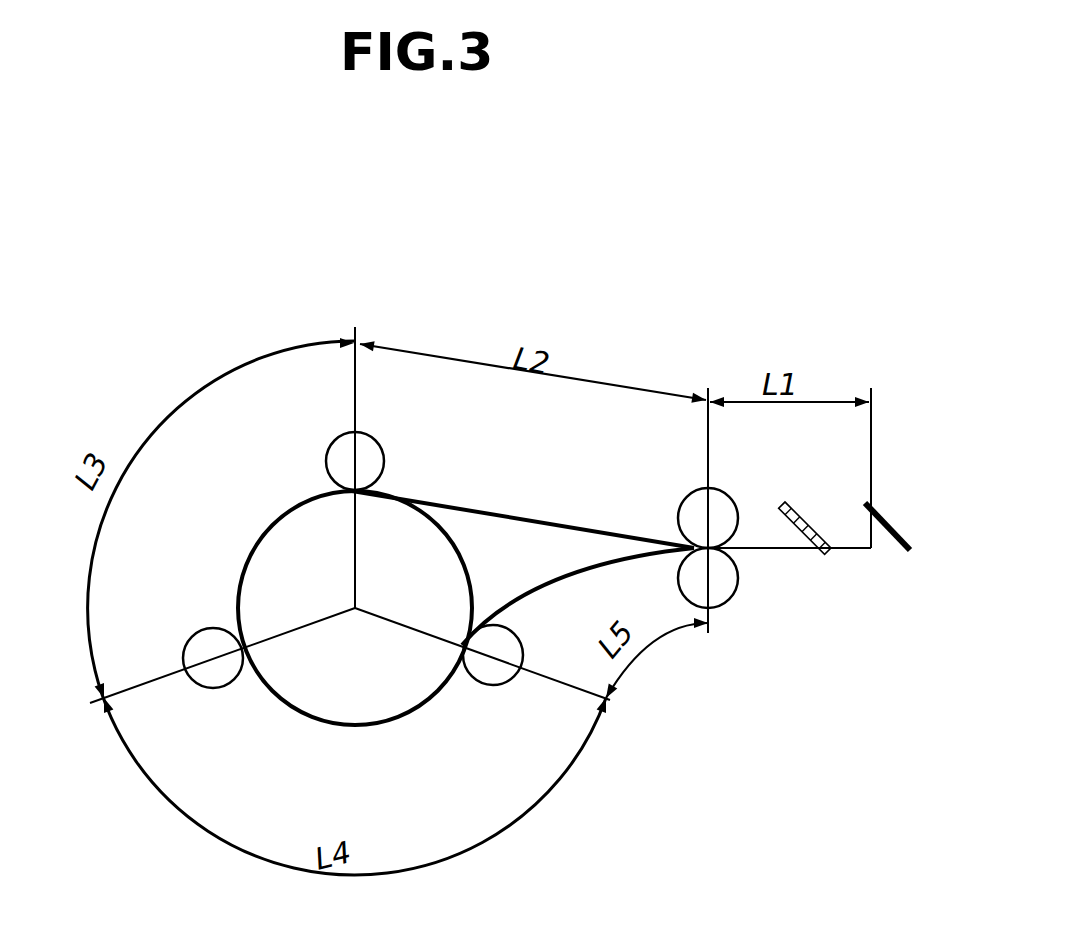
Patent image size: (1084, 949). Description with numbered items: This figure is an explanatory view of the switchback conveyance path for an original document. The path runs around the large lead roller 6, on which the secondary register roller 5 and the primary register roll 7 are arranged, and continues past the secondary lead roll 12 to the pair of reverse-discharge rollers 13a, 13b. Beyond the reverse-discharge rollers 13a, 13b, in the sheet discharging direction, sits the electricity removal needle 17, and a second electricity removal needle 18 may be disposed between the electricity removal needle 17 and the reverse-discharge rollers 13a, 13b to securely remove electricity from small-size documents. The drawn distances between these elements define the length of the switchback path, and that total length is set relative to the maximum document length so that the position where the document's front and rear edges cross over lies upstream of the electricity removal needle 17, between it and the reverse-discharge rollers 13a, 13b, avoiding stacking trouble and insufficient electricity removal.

The secondary register roller 5 is at (337, 456).
The lead roller 6 is at (320, 690).
The primary register roll 7 is at (206, 645).
The secondary lead roll 12 is at (496, 676).
The reverse-discharge roller 13a is at (692, 505).
The reverse-discharge roller 13b is at (722, 583).
The electricity removal needle 17 is at (903, 534).
The electricity removal needle 18 is at (805, 530).